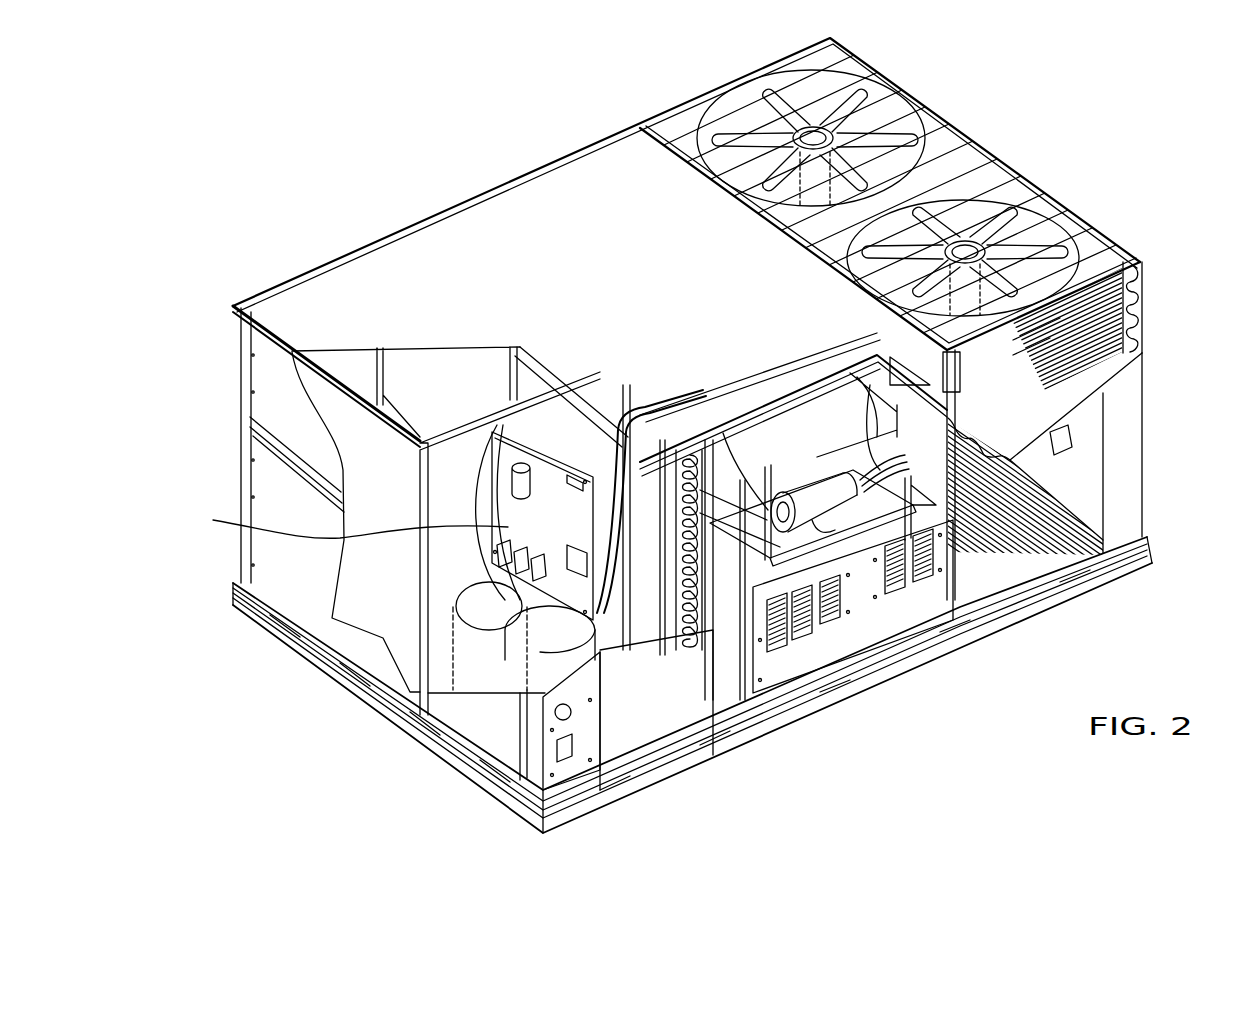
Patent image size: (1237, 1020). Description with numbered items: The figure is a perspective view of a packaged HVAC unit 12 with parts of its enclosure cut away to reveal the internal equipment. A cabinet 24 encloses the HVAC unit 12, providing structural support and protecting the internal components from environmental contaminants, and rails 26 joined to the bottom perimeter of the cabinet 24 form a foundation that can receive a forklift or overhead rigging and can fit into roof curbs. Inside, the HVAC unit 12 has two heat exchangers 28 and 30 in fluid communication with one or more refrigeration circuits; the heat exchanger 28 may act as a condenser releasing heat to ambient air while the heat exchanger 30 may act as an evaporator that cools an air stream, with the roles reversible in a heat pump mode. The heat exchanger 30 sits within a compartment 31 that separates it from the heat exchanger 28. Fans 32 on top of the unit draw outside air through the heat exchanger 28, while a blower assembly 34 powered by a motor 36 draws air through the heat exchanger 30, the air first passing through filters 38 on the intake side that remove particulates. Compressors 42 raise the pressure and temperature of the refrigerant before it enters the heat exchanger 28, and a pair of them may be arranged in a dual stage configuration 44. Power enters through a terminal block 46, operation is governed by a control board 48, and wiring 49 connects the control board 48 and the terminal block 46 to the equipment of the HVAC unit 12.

The HVAC unit 12 is at (418, 133).
The cabinet 24 is at (277, 553).
The rails 26 is at (302, 652).
The heat exchanger 28 is at (1127, 304).
The heat exchanger 30 is at (700, 643).
The compartment 31 is at (730, 445).
The fans 32 is at (977, 210).
The blower assembly 34 is at (882, 447).
The motor 36 is at (817, 493).
The filters 38 is at (653, 470).
The compressors 42 is at (462, 636).
The dual stage configuration 44 is at (458, 594).
The terminal block 46 is at (344, 521).
The control board 48 is at (577, 455).
The wiring 49 is at (655, 440).